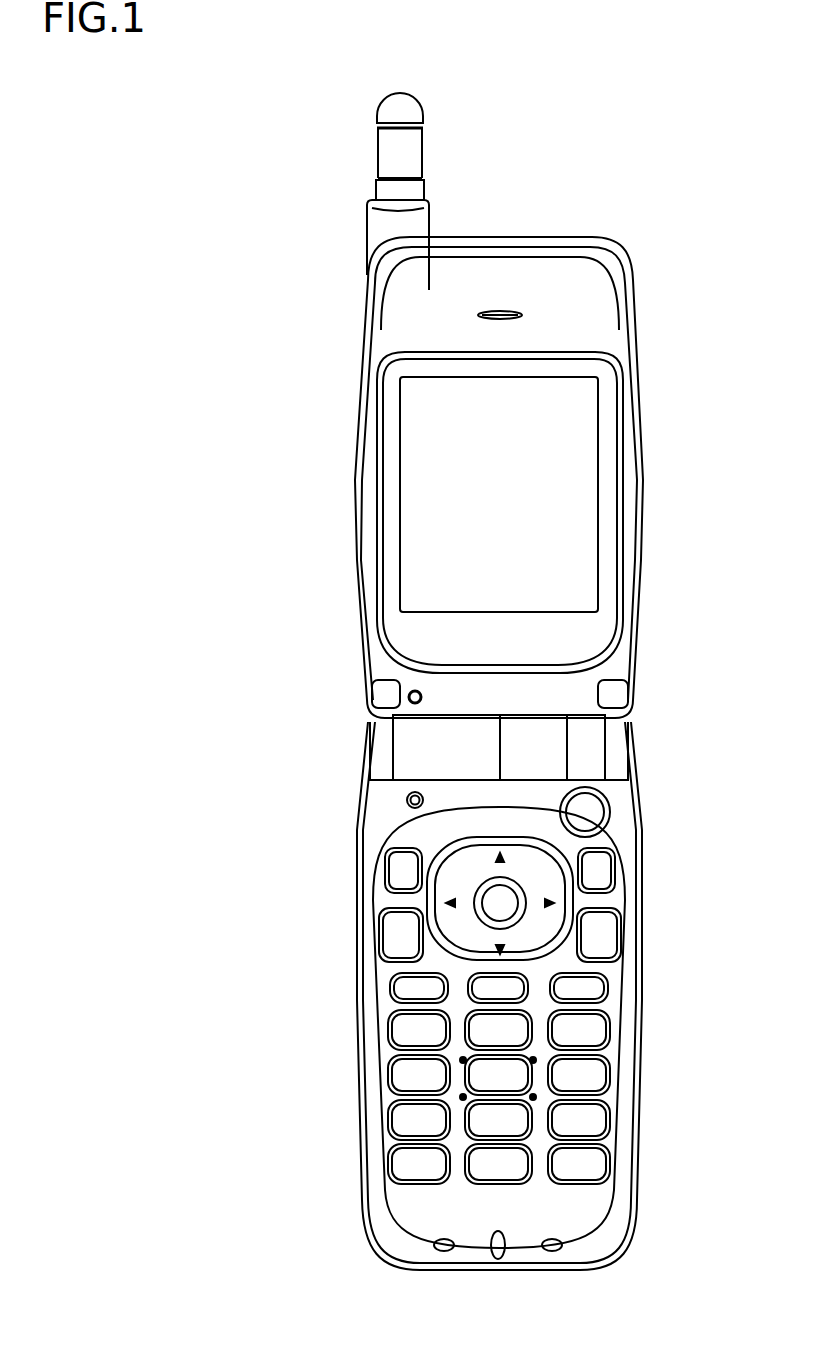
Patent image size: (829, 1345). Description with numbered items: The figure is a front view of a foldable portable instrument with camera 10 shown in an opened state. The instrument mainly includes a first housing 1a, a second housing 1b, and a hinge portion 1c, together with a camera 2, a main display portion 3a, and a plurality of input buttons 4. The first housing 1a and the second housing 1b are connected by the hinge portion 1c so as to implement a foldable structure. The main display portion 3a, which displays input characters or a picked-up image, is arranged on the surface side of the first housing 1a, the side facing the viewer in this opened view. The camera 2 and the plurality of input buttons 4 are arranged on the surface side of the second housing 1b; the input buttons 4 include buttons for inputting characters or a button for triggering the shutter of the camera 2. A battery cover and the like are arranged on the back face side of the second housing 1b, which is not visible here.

The foldable portable instrument with camera 10 is at (558, 683).
The first housing 1a is at (643, 538).
The main display portion 3a is at (548, 459).
The hinge portion 1c is at (623, 750).
The camera 2 is at (585, 812).
The input buttons 4 is at (666, 835).
The second housing 1b is at (622, 1243).